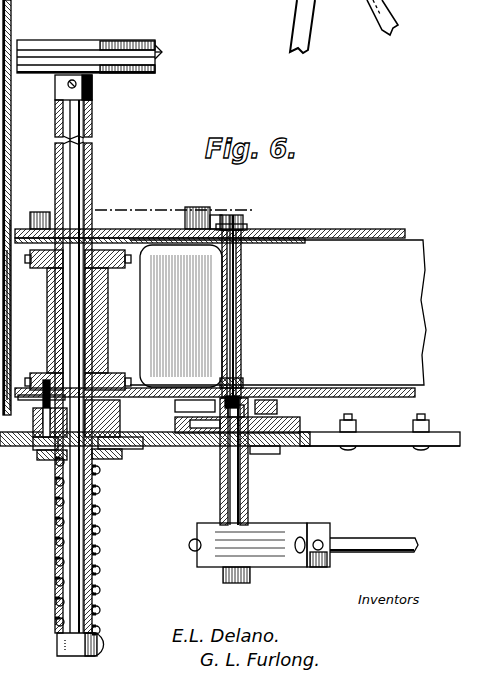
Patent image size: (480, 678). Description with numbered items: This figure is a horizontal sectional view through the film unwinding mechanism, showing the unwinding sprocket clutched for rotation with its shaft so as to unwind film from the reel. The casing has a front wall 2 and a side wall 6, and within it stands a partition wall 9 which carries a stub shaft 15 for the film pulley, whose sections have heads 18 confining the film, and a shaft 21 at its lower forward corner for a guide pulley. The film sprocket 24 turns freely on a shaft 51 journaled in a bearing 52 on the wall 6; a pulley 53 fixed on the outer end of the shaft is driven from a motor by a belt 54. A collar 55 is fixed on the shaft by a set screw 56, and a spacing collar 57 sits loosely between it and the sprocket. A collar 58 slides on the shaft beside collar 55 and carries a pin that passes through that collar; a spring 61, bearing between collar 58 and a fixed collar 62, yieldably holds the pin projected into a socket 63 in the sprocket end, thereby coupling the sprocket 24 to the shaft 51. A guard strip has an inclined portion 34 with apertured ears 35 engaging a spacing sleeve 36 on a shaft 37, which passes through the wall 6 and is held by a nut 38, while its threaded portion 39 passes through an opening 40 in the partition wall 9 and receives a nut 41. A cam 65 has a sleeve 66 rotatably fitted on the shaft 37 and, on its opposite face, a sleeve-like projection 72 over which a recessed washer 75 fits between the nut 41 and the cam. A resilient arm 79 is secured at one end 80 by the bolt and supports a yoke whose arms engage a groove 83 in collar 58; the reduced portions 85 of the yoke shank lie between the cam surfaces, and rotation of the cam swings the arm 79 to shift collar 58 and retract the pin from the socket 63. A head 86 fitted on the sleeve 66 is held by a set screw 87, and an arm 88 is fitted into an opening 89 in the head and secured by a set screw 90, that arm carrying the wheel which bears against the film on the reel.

The front wall 2 is at (22, 394).
The side wall 6 is at (318, 230).
The partition wall 9 is at (342, 389).
The stub shaft 15 is at (6, 310).
The heads 18 is at (6, 330).
The shaft 21 is at (6, 346).
The film sprocket 24 is at (107, 318).
The inclined portion 34 is at (357, 250).
The apertured ears 35 is at (262, 240).
The spacing sleeve 36 is at (243, 278).
The shaft 37 is at (243, 318).
The nut 38 is at (238, 216).
The threaded portion 39 is at (243, 380).
The opening 40 is at (241, 398).
The nut 41 is at (226, 405).
The shaft 51 is at (76, 212).
The bearing 52 is at (90, 172).
The pulley 53 is at (113, 40).
The belt 54 is at (164, 52).
The collar 55 is at (178, 404).
The set screw 56 is at (176, 422).
The spacing collar 57 is at (108, 372).
The collar 58 is at (120, 446).
The spring 61 is at (101, 490).
The collar 62 is at (106, 636).
The socket 63 is at (44, 380).
The cam 65 is at (290, 448).
The sleeve 66 is at (249, 500).
The sleeve-like projection 72 is at (256, 406).
The washer 75 is at (195, 447).
The resilient arm 79 is at (34, 440).
The secured end 80 is at (35, 412).
The groove 83 is at (42, 462).
The reduced portions 85 is at (258, 448).
The head 86 is at (258, 545).
The set screw 87 is at (192, 551).
The arm 88 is at (388, 538).
The opening 89 is at (303, 535).
The set screw 90 is at (322, 542).